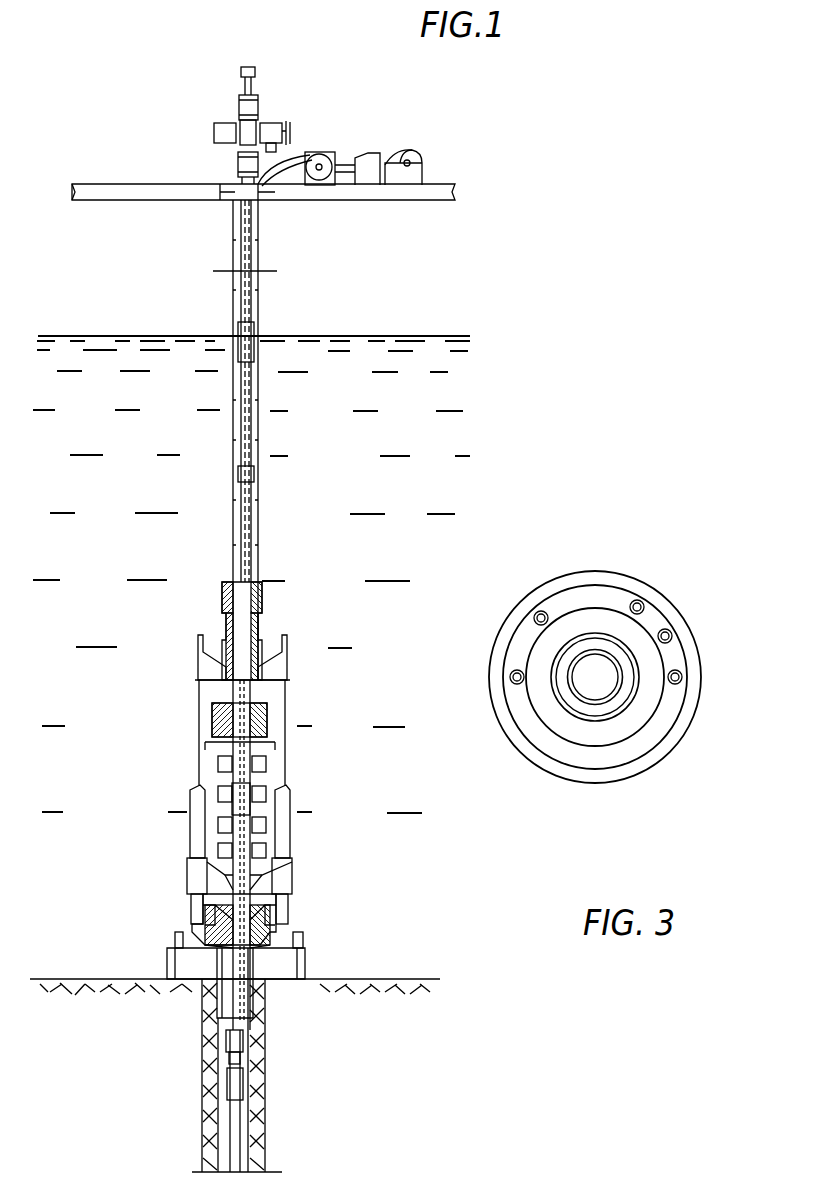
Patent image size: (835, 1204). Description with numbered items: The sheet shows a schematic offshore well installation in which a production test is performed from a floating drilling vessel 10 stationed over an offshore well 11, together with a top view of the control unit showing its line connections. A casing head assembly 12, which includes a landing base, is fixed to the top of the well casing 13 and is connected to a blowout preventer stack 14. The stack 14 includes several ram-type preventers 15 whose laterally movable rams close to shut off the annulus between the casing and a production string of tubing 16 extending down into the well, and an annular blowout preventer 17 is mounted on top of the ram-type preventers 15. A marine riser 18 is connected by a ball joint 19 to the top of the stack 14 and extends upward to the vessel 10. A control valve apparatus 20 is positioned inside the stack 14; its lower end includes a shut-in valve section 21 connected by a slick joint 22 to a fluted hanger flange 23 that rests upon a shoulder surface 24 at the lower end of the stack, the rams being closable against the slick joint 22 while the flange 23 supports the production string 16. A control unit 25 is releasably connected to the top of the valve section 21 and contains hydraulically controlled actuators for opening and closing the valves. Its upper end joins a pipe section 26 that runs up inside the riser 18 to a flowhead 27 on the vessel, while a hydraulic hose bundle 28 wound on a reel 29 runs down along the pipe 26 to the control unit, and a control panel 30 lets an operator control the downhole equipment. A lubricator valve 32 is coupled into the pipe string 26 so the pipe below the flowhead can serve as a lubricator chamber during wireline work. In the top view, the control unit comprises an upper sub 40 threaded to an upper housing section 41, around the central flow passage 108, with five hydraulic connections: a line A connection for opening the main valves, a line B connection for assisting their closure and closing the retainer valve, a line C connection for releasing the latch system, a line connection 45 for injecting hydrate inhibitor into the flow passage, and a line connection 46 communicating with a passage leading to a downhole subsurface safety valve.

In FIG. 1, the floating drilling vessel 10 is at (456, 180).
In FIG. 1, the offshore well 11 is at (272, 1069).
In FIG. 1, the casing head assembly 12 is at (302, 963).
In FIG. 1, the well casing 13 is at (218, 1012).
In FIG. 1, the blowout preventer stack 14 is at (290, 801).
In FIG. 1, the ram-type preventers 15 is at (262, 846).
In FIG. 1, the production string of tubing 16 is at (228, 1070).
In FIG. 1, the annular blowout preventer 17 is at (265, 712).
In FIG. 1, the marine riser 18 is at (256, 525).
In FIG. 1, the ball joint 19 is at (262, 600).
In FIG. 1, the control valve apparatus 20 is at (250, 768).
In FIG. 1, the shut-in valve section 21 is at (245, 805).
In FIG. 1, the slick joint 22 is at (230, 862).
In FIG. 1, the fluted hanger flange 23 is at (258, 918).
In FIG. 1, the shoulder surface 24 is at (228, 928).
In FIG. 1, the control unit 25 is at (240, 722).
In FIG. 1, the pipe section 26 is at (250, 440).
In FIG. 1, the flowhead 27 is at (258, 108).
In FIG. 1, the hydraulic hose bundle 28 is at (392, 152).
In FIG. 1, the reel 29 is at (420, 152).
In FIG. 1, the control panel 30 is at (369, 196).
In FIG. 1, the lubricator valve 32 is at (252, 330).
In FIG. 3, the upper sub 40 is at (613, 705).
In FIG. 3, the upper housing section 41 is at (673, 736).
In FIG. 3, the line connection 45 is at (535, 612).
In FIG. 3, the line connection 46 is at (509, 680).
In FIG. 3, the flow passage 108 is at (583, 687).
In FIG. 3, the line A connection A is at (683, 677).
In FIG. 3, the line B connection B is at (670, 630).
In FIG. 3, the line C connection C is at (640, 600).